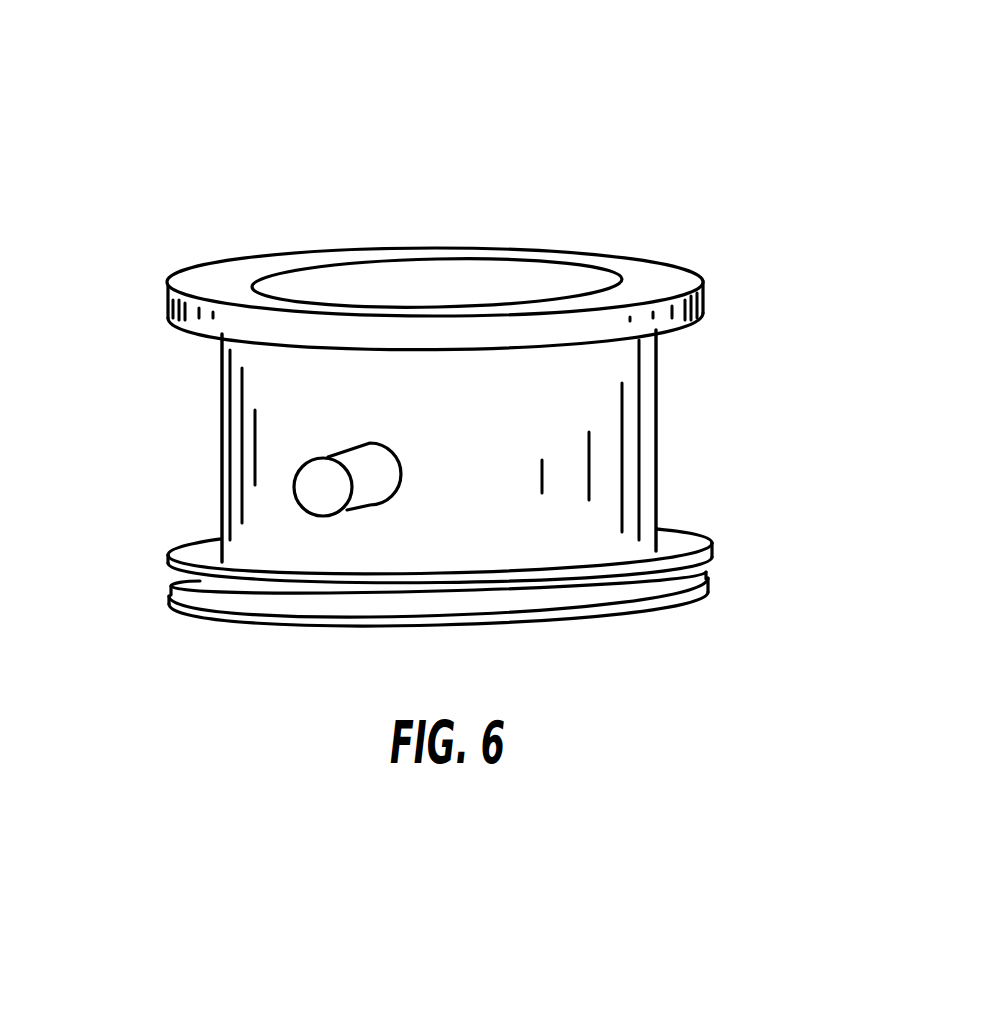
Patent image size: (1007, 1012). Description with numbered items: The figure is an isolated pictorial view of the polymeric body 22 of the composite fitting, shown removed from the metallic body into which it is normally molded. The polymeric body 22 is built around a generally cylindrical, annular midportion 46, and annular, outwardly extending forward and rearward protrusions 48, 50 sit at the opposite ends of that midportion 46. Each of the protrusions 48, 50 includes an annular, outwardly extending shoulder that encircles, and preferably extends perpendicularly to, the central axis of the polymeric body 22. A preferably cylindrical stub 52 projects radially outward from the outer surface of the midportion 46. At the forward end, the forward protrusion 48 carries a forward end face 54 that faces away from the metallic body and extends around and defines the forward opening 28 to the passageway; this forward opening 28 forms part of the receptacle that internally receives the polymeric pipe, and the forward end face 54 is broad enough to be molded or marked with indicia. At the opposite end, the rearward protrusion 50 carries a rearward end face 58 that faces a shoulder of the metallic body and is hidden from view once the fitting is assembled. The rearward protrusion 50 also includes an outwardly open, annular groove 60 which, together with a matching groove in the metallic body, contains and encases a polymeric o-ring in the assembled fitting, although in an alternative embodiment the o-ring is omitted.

The polymeric body 22 is at (745, 127).
The forward opening 28 is at (432, 297).
The forward end face 54 is at (678, 273).
The forward protrusion 48 is at (705, 300).
The midportion 46 is at (656, 430).
The stub 52 is at (323, 487).
The rearward protrusion 50 is at (706, 546).
The annular groove 60 is at (171, 582).
The rearward end face 58 is at (680, 604).